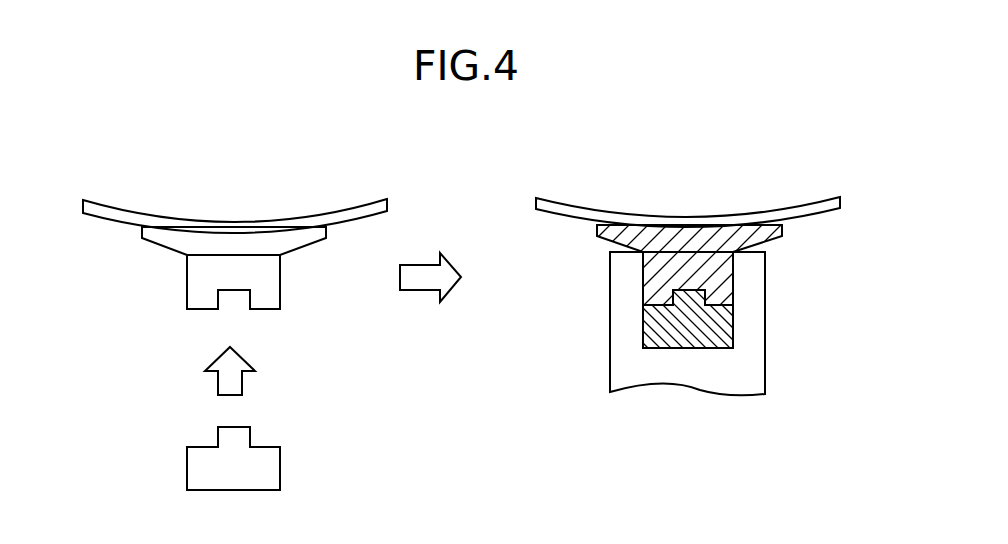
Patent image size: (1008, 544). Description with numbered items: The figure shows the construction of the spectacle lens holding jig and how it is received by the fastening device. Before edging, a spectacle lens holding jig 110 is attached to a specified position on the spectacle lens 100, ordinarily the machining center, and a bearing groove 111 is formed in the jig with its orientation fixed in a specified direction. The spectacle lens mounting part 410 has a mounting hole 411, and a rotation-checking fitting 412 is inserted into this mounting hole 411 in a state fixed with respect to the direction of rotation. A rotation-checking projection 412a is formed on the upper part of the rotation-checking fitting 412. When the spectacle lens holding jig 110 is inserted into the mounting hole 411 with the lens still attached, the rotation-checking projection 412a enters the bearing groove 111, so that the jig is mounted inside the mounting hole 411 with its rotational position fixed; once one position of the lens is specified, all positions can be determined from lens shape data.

The spectacle lens 100 is at (362, 205).
The spectacle lens holding jig 110 is at (187, 273).
The bearing groove 111 is at (233, 297).
The spectacle lens mounting part 410 is at (618, 262).
The mounting hole 411 is at (727, 273).
The rotation-checking fitting 412 is at (268, 470).
The rotation-checking projection 412a is at (243, 435).